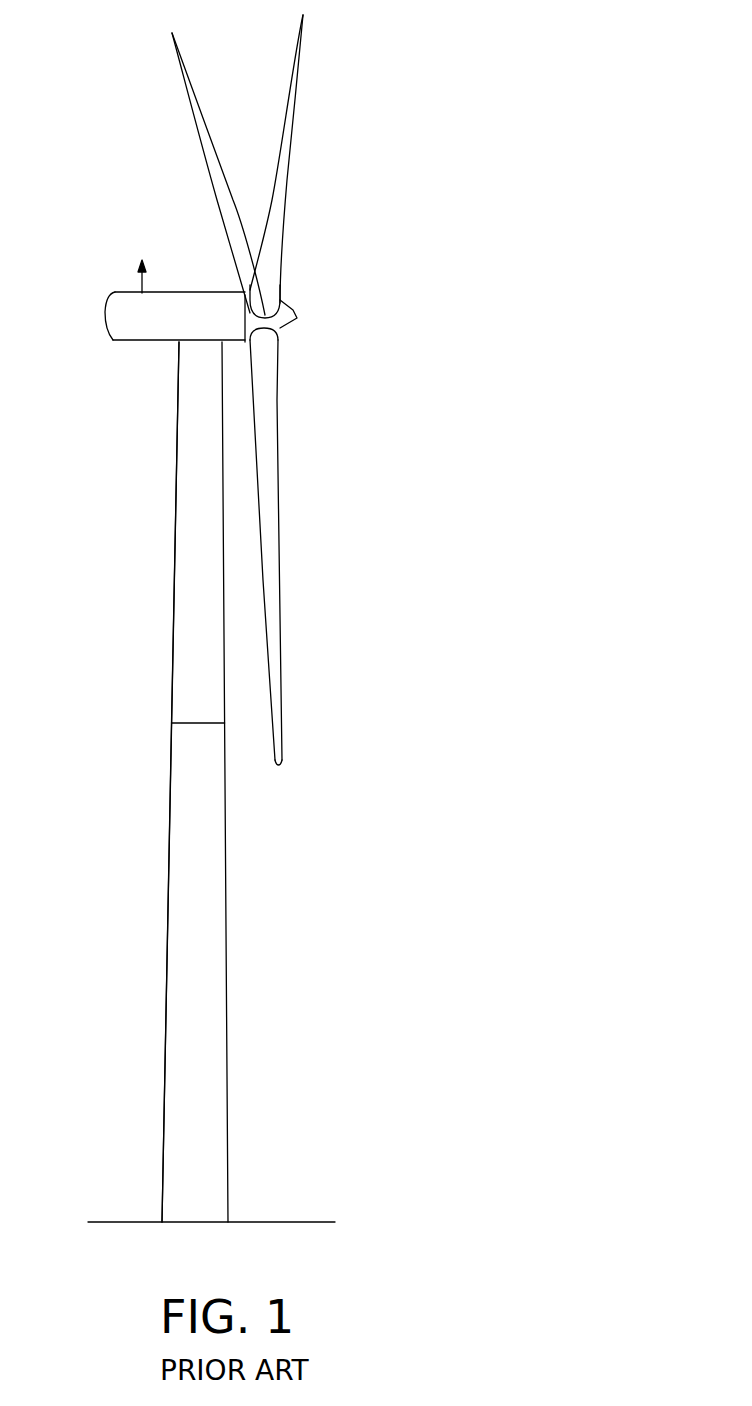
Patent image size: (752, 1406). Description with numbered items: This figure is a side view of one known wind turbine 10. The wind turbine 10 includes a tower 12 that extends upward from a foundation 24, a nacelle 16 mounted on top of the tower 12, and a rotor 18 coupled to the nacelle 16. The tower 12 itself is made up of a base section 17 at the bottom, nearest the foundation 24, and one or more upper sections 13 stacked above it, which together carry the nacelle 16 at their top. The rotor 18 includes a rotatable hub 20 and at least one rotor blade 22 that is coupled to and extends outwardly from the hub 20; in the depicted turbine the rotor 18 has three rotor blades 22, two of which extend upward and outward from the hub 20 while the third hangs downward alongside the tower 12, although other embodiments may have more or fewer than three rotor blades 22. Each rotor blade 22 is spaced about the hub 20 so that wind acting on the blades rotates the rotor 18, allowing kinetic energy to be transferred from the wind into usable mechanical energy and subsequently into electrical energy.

The wind turbine 10 is at (450, 117).
The tower 12 is at (205, 840).
The upper section 13 is at (192, 582).
The nacelle 16 is at (143, 325).
The base section 17 is at (190, 998).
The rotor 18 is at (292, 292).
The hub 20 is at (283, 313).
The rotor blade 22 is at (190, 93).
The foundation 24 is at (140, 1220).